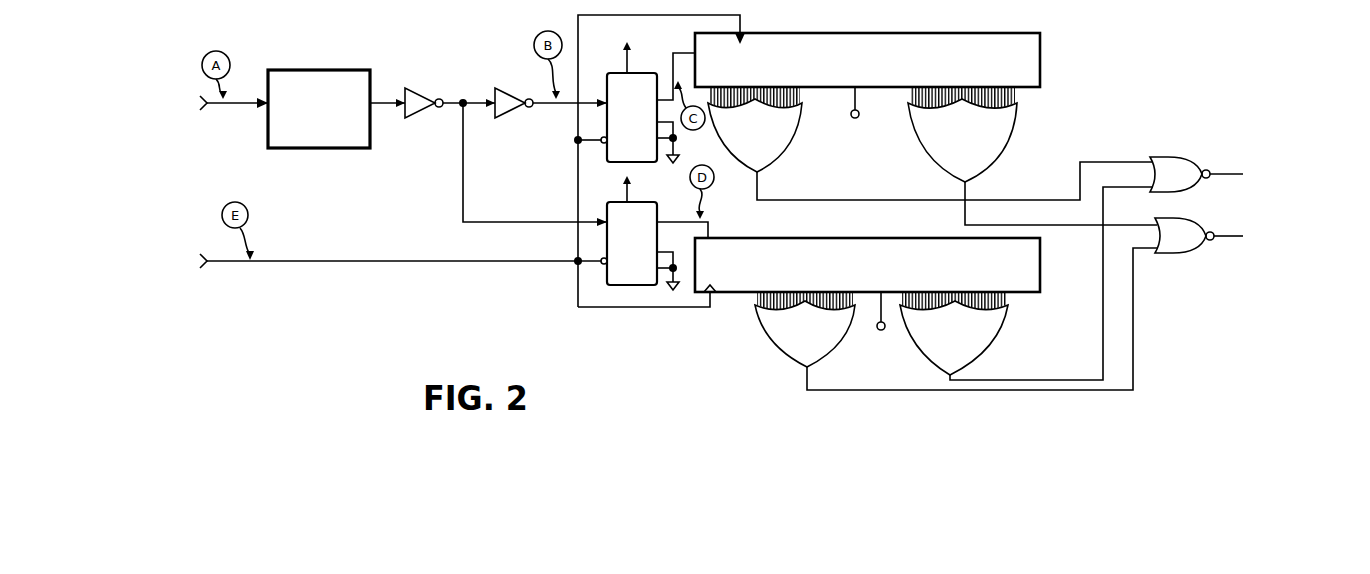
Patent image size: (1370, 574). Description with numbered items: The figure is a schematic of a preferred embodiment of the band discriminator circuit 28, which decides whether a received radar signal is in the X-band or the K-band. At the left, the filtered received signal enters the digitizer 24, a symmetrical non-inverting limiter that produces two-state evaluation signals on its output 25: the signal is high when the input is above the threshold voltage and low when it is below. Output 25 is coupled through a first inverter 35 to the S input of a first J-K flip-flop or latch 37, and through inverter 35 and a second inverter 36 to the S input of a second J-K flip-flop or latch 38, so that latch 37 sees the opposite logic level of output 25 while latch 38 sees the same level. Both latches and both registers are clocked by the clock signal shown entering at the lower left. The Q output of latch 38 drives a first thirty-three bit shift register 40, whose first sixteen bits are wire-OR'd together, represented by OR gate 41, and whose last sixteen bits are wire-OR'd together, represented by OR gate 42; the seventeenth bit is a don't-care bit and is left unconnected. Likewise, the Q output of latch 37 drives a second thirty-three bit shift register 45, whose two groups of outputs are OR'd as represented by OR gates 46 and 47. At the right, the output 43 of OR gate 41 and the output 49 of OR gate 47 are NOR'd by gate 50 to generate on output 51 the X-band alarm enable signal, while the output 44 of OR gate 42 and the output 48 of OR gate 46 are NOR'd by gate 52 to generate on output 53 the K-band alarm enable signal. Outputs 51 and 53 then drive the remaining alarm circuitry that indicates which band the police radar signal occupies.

The digitizer 24 is at (308, 149).
The output 25 is at (586, 93).
The band discriminator circuit 28 is at (514, 309).
The first inverter 35 is at (417, 120).
The second inverter 36 is at (507, 118).
The first J-K flip-flop or latch 37 is at (612, 290).
The second J-K flip-flop or latch 38 is at (647, 63).
The first 33 bit shift register 40 is at (1055, 50).
The OR gate 41 is at (797, 118).
The OR gate 42 is at (1000, 128).
The output 43 is at (800, 200).
The output 44 is at (968, 190).
The second 33 bit shift register 45 is at (1052, 265).
The OR gate 46 is at (838, 340).
The OR gate 47 is at (1000, 325).
The output 48 is at (870, 390).
The output 49 is at (1033, 380).
The NOR gate 50 is at (1175, 156).
The output 51 is at (1240, 180).
The NOR gate 52 is at (1175, 255).
The output 53 is at (1235, 236).